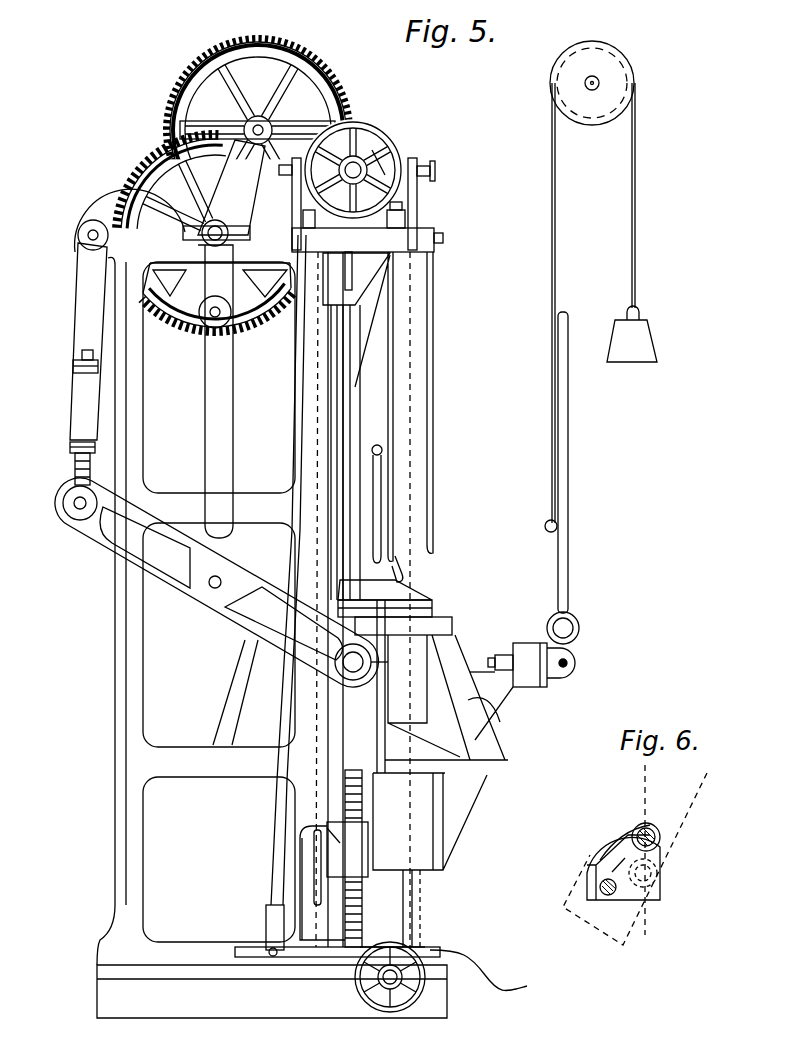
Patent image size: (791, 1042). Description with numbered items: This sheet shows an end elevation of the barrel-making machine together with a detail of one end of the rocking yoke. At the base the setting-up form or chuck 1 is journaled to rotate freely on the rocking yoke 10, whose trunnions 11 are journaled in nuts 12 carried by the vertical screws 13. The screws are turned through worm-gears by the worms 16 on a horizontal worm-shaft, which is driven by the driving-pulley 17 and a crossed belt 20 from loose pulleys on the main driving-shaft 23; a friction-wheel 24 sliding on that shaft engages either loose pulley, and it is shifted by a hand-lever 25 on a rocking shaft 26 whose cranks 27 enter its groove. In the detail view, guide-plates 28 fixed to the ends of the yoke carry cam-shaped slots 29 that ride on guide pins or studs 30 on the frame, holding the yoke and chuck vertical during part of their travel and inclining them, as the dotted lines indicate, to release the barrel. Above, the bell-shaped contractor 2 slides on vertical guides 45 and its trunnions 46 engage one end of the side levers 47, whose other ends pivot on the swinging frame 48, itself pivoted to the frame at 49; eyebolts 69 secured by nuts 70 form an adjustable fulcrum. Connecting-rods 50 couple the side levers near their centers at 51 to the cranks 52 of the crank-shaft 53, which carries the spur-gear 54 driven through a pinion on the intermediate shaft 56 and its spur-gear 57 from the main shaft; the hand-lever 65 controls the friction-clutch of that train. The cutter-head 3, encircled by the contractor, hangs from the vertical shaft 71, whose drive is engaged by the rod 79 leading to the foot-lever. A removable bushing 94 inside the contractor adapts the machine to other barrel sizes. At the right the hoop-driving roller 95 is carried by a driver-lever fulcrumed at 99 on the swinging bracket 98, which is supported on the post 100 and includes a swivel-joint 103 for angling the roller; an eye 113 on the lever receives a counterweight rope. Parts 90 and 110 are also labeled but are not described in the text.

In FIG. 5, the setting-up form or chuck 1 is at (430, 821).
In FIG. 5, the bell-shaped contractor 2 is at (446, 697).
In FIG. 5, the cutter-head 3 is at (430, 610).
In FIG. 6, the rocking yoke 10 is at (657, 872).
In FIG. 5, the trunnions 11 is at (346, 835).
In FIG. 6, the trunnions 11 is at (650, 826).
In FIG. 5, the nuts 12 is at (347, 849).
In FIG. 5, the vertical screws 13 is at (362, 906).
In FIG. 5, the worms 16 is at (390, 977).
In FIG. 5, the driving-pulley 17 is at (392, 937).
In FIG. 5, the belt 20 is at (478, 961).
In FIG. 5, the main driving-shaft 23 is at (353, 170).
In FIG. 5, the friction-wheel 24 is at (383, 162).
In FIG. 5, the hand-lever 25 is at (434, 328).
In FIG. 5, the rocking shaft 26 is at (451, 237).
In FIG. 5, the cranks 27 is at (290, 190).
In FIG. 6, the guide-plates 28 is at (625, 842).
In FIG. 6, the cam-shaped slots 29 is at (619, 868).
In FIG. 5, the guide pins or studs 30 is at (300, 880).
In FIG. 6, the guide pins or studs 30 is at (608, 895).
In FIG. 5, the vertical guides 45 is at (345, 786).
In FIG. 5, the trunnions 46 is at (361, 662).
In FIG. 5, the side levers 47 is at (570, 545).
In FIG. 5, the swinging frame 48 is at (88, 341).
In FIG. 5, the pivot of swinging frame 49 is at (103, 226).
In FIG. 5, the connecting-rods 50 is at (215, 391).
In FIG. 5, the coupling point of side levers 51 is at (225, 582).
In FIG. 5, the cranks 52 is at (217, 297).
In FIG. 5, the crank-shaft 53 is at (216, 233).
In FIG. 5, the spur-gear 54 is at (188, 186).
In FIG. 5, the intermediate shaft 56 is at (232, 187).
In FIG. 5, the spur-gear 57 is at (305, 60).
In FIG. 5, the hand-lever 65 is at (374, 406).
In FIG. 5, the eyebolts 69 is at (78, 486).
In FIG. 5, the nuts 70 is at (73, 366).
In FIG. 5, the vertical shaft 71 is at (370, 425).
In FIG. 5, the rod 79 is at (294, 436).
In FIG. 5, the hook 90 is at (397, 561).
In FIG. 5, the removable bushing 94 is at (450, 628).
In FIG. 5, the hoop-driving roller 95 is at (574, 628).
In FIG. 5, the swinging bracket 98 is at (522, 670).
In FIG. 5, the fulcrum of driver-lever 99 is at (572, 663).
In FIG. 5, the post 100 is at (418, 893).
In FIG. 5, the swivel-joint 103 is at (507, 691).
In FIG. 5, the plate 110 is at (385, 590).
In FIG. 5, the eye 113 is at (537, 527).